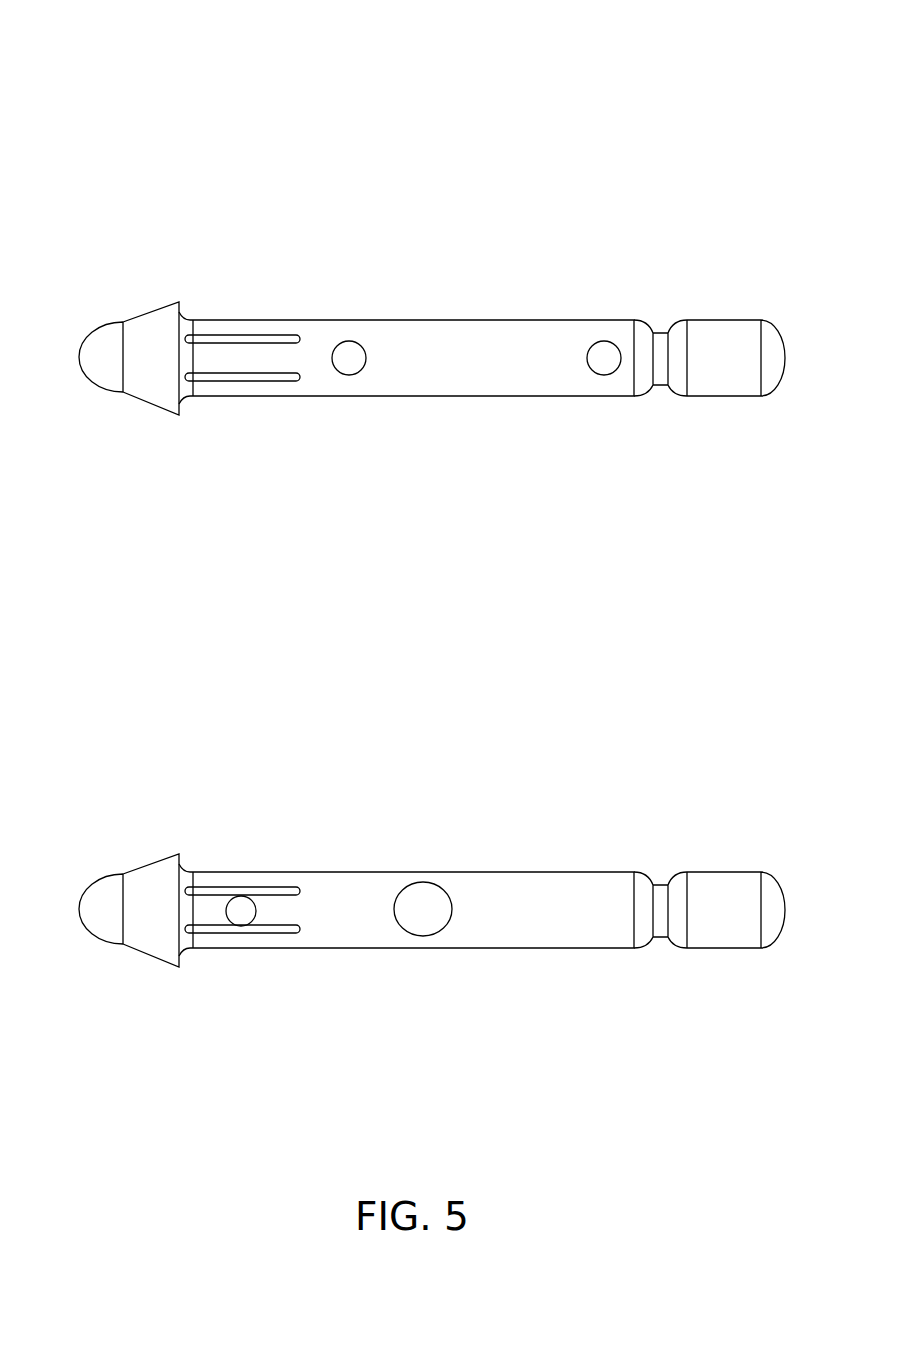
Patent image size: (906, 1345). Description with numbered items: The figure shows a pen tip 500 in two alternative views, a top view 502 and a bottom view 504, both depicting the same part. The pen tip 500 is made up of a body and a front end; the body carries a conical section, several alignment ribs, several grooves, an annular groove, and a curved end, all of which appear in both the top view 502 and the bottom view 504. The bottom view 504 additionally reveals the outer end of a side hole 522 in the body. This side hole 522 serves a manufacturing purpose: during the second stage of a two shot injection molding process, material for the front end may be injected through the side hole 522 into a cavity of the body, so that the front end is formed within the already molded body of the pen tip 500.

The pen tip 500 is at (138, 76).
The top view 502 is at (136, 275).
The bottom view 504 is at (134, 1001).
The side hole 522 is at (243, 925).